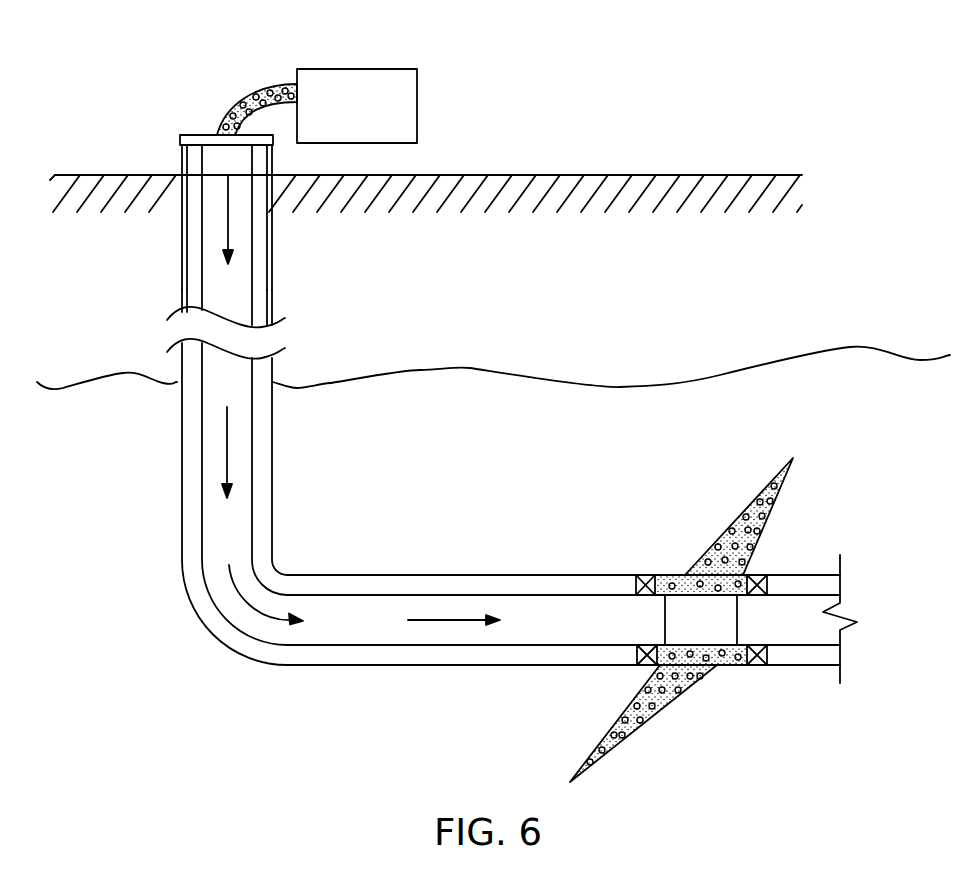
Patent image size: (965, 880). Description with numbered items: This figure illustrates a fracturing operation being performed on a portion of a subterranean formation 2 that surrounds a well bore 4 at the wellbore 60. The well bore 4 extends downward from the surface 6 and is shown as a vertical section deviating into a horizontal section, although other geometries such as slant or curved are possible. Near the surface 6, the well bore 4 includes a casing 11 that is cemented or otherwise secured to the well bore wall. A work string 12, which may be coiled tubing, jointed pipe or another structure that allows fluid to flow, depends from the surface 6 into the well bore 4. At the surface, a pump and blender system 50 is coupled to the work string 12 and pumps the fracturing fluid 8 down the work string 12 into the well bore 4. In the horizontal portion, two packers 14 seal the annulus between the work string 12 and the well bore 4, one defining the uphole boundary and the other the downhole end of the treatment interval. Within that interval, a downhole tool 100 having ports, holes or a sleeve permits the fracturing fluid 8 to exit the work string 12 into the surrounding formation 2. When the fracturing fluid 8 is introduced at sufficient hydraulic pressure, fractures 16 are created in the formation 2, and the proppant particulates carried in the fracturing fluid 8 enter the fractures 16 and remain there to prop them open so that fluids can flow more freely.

The subterranean formation 2 is at (477, 383).
The well bore 4 is at (195, 263).
The surface 6 is at (603, 175).
The fracturing fluid 8 is at (244, 100).
The casing 11 is at (180, 290).
The work string 12 is at (200, 490).
The packers 14 is at (645, 575).
The fractures 16 is at (734, 500).
The pump and blender system 50 is at (357, 68).
The wellbore 60 is at (203, 660).
The downhole tool 100 is at (703, 615).